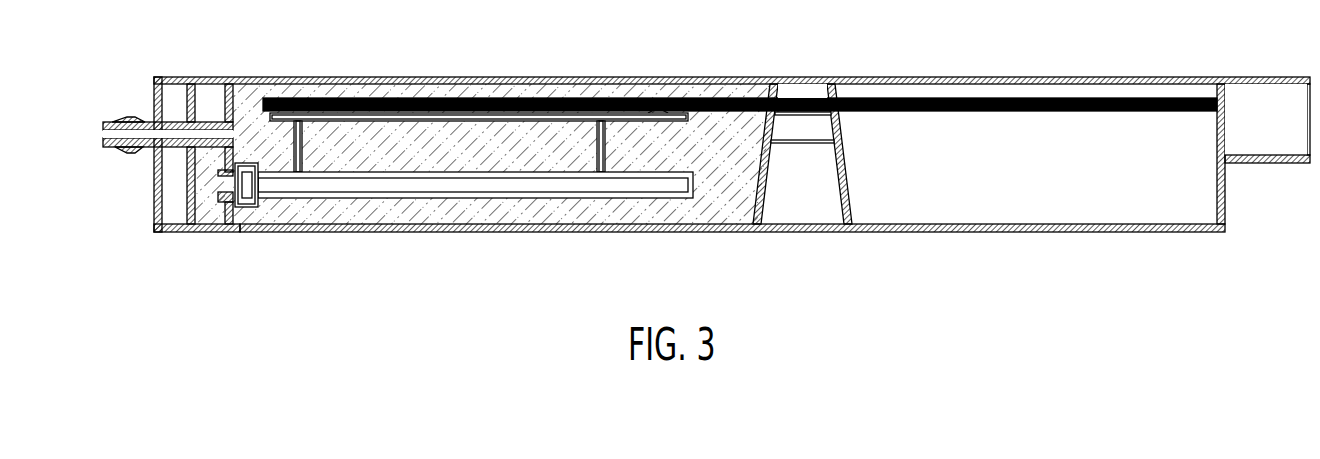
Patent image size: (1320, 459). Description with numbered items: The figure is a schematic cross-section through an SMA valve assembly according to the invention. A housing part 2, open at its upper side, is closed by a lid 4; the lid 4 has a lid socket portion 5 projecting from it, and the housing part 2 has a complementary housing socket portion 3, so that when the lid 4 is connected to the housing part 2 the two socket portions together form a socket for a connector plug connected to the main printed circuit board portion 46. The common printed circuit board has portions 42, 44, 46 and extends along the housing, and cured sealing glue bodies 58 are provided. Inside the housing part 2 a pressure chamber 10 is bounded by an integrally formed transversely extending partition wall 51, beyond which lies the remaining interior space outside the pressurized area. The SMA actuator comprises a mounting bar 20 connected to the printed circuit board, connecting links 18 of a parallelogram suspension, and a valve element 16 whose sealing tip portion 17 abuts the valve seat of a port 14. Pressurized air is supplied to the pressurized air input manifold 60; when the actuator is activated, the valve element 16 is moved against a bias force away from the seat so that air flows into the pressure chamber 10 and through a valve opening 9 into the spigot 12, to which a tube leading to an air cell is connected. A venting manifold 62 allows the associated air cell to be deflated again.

The housing part 2 is at (1000, 233).
The housing socket portion 3 is at (1258, 164).
The lid 4 is at (1099, 77).
The lid socket portion 5 is at (1273, 77).
The valve opening 9 is at (236, 117).
The pressure chamber 10 is at (734, 210).
The spigot 12 is at (114, 121).
The port 14 is at (217, 203).
The valve element 16 is at (291, 207).
The sealing tip portion 17 is at (250, 207).
The connecting links 18 is at (305, 150).
The mounting bar 20 is at (468, 120).
The printed circuit board portion 42 is at (354, 97).
The printed circuit board portion 44 is at (794, 98).
The main printed circuit board portion 46 is at (993, 98).
The transversely extending partition wall 51 is at (830, 185).
The cured sealing glue body 58 is at (812, 92).
The pressurized air input manifold 60 is at (205, 232).
The venting manifold 62 is at (167, 197).